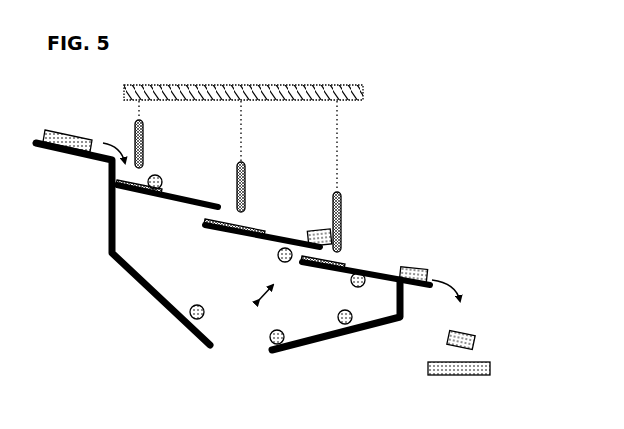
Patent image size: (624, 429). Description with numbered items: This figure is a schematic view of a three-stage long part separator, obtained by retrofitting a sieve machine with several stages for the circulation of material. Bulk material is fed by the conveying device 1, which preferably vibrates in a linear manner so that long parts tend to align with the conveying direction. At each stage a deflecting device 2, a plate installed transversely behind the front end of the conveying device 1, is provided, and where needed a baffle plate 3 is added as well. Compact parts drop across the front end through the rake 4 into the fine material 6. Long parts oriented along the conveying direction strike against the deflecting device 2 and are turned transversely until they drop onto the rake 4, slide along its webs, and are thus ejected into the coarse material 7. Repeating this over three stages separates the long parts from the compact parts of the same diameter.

The conveying device 1 is at (123, 244).
The deflecting device 2 is at (243, 168).
The baffle plate 3 is at (273, 235).
The rake 4 is at (255, 225).
The fine material 6 is at (314, 338).
The coarse material 7 is at (459, 380).